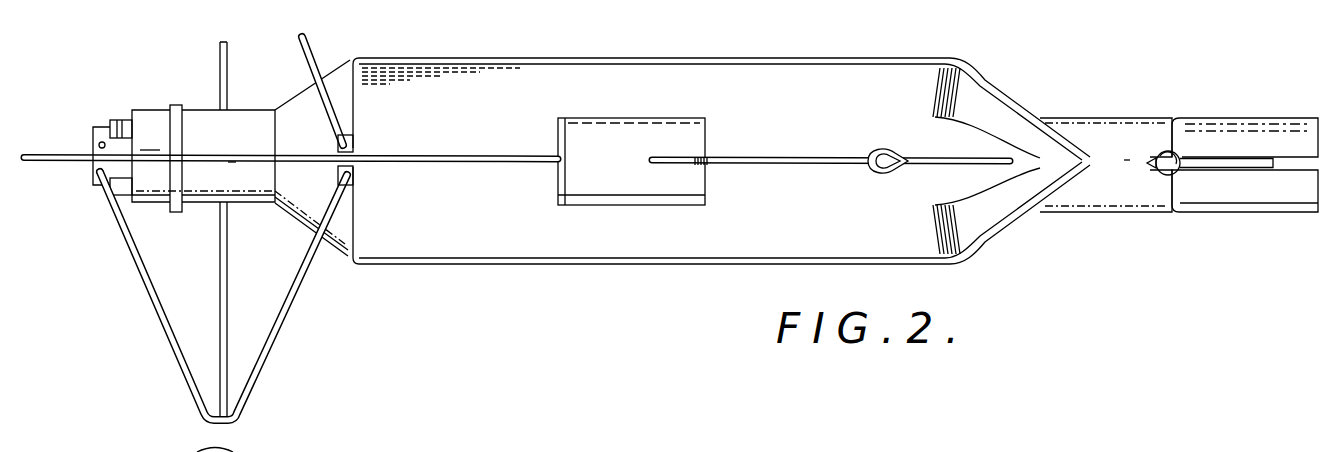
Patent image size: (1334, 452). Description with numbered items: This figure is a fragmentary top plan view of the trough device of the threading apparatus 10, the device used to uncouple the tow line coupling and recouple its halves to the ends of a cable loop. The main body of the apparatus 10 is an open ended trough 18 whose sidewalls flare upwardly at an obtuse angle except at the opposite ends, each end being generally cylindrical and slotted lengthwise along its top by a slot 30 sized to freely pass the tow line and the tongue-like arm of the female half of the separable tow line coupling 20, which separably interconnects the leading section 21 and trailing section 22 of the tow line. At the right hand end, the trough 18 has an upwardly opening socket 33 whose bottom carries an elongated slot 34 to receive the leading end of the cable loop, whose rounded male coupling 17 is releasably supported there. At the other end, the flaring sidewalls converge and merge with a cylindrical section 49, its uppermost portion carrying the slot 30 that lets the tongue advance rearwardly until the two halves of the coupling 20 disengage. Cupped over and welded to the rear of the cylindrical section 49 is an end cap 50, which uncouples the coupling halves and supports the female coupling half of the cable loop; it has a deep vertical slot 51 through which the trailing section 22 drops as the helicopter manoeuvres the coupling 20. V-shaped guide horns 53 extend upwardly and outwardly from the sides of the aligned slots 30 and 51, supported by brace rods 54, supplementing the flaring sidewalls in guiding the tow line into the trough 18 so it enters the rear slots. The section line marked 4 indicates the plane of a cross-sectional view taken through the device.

The section line 4- 4 is at (47, 162).
The threading apparatus 10 is at (1065, 244).
The rounded male coupling 17 is at (1184, 152).
The trough 18 is at (417, 264).
The separable tow line coupling 20 is at (640, 113).
The leading section of the tow line 21 is at (925, 164).
The trailing section of the tow line 22 is at (477, 165).
The slot 30 is at (230, 155).
The upwardly opening socket 33 is at (1217, 128).
The elongated slot 34 is at (1291, 164).
The cylindrical section 49 is at (248, 110).
The end cap 50 is at (148, 109).
The deep vertical slot 51 is at (145, 158).
The V-shaped guide horns 53 is at (310, 44).
The brace rods 54 is at (227, 315).